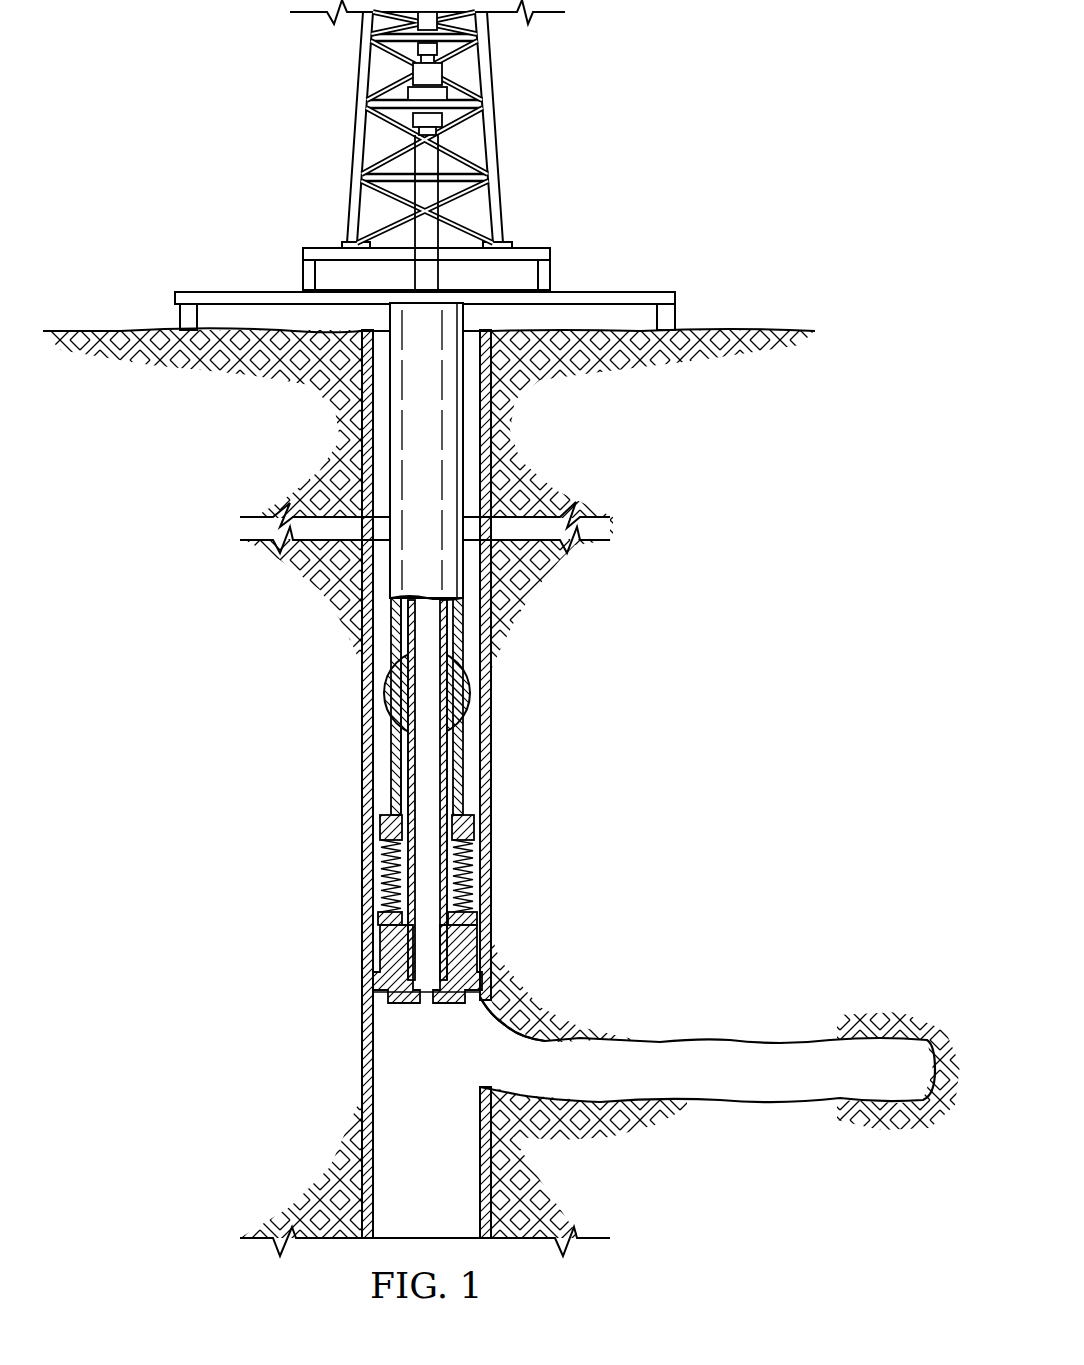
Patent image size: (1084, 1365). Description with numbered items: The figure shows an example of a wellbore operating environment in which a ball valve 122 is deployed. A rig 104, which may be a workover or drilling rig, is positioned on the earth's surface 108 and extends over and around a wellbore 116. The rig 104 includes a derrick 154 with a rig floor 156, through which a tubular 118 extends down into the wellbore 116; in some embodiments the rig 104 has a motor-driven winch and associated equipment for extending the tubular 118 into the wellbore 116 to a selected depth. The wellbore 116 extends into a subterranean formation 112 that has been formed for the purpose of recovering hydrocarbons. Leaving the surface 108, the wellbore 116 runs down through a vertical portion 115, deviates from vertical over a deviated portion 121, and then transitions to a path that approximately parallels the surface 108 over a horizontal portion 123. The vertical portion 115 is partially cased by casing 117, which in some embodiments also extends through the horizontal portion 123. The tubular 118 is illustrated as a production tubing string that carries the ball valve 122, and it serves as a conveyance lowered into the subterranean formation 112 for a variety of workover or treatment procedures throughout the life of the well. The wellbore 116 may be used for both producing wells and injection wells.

The rig 104 is at (425, 165).
The earth's surface 108 is at (745, 330).
The subterranean formation 112 is at (587, 1180).
The vertical portion 115 is at (493, 624).
The wellbore 116 is at (487, 480).
The casing 117 is at (482, 732).
The tubular 118 is at (392, 412).
The deviated portion 121 is at (548, 1047).
The ball valve 122 is at (342, 888).
The horizontal portion 123 is at (717, 1098).
The derrick 154 is at (355, 134).
The rig floor 156 is at (534, 248).